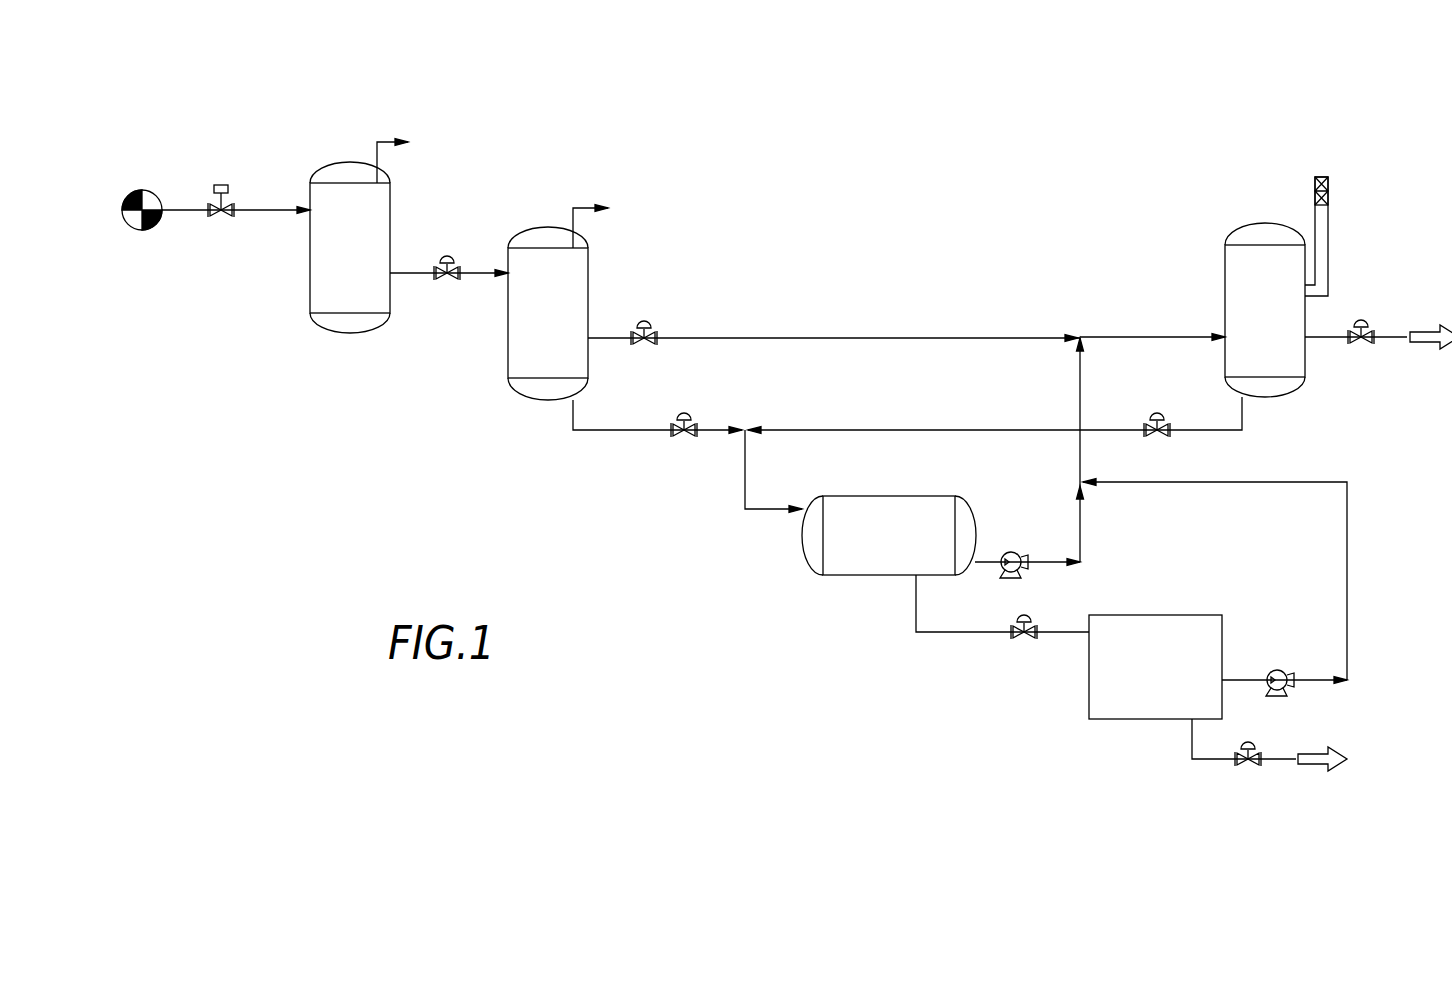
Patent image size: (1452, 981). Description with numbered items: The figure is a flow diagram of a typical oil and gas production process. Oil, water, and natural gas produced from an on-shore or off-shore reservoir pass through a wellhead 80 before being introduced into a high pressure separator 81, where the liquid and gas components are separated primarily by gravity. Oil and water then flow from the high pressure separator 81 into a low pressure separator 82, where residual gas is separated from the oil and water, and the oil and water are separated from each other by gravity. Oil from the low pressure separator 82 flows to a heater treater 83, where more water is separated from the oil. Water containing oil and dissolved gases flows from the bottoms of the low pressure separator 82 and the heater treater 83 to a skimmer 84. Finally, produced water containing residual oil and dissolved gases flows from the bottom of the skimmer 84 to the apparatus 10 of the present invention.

The apparatus 10 is at (1113, 720).
The wellhead 80 is at (157, 190).
The high pressure separator 81 is at (323, 172).
The low pressure separator 82 is at (523, 232).
The heater treater 83 is at (1238, 227).
The skimmer 84 is at (847, 578).